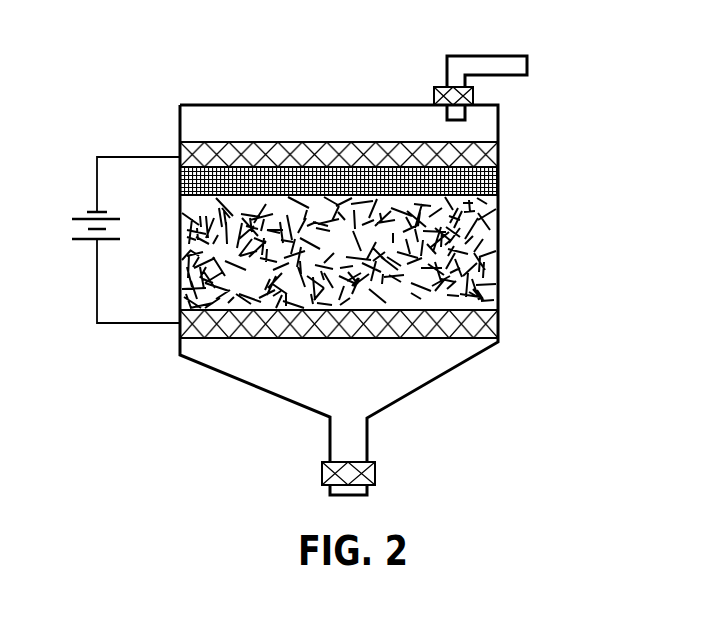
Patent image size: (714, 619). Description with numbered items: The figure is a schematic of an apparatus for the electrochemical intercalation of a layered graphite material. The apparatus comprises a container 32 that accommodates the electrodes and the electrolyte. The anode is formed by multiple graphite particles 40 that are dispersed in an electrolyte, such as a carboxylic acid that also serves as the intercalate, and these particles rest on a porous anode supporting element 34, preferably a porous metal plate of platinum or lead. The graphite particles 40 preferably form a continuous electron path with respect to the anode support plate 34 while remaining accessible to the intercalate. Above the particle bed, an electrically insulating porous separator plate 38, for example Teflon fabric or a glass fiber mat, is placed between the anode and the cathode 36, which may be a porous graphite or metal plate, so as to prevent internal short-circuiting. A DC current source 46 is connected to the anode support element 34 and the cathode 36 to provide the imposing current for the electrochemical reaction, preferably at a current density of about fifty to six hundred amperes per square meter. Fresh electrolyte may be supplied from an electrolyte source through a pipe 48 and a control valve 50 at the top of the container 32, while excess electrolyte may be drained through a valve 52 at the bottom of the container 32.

The container 32 is at (502, 272).
The porous anode supporting element 34 is at (453, 328).
The cathode 36 is at (485, 157).
The porous separator plate 38 is at (478, 182).
The graphite particles 40 is at (472, 298).
The DC current source 46 is at (108, 240).
The pipe 48 is at (500, 63).
The control valve 50 is at (433, 88).
The valve 52 is at (360, 473).